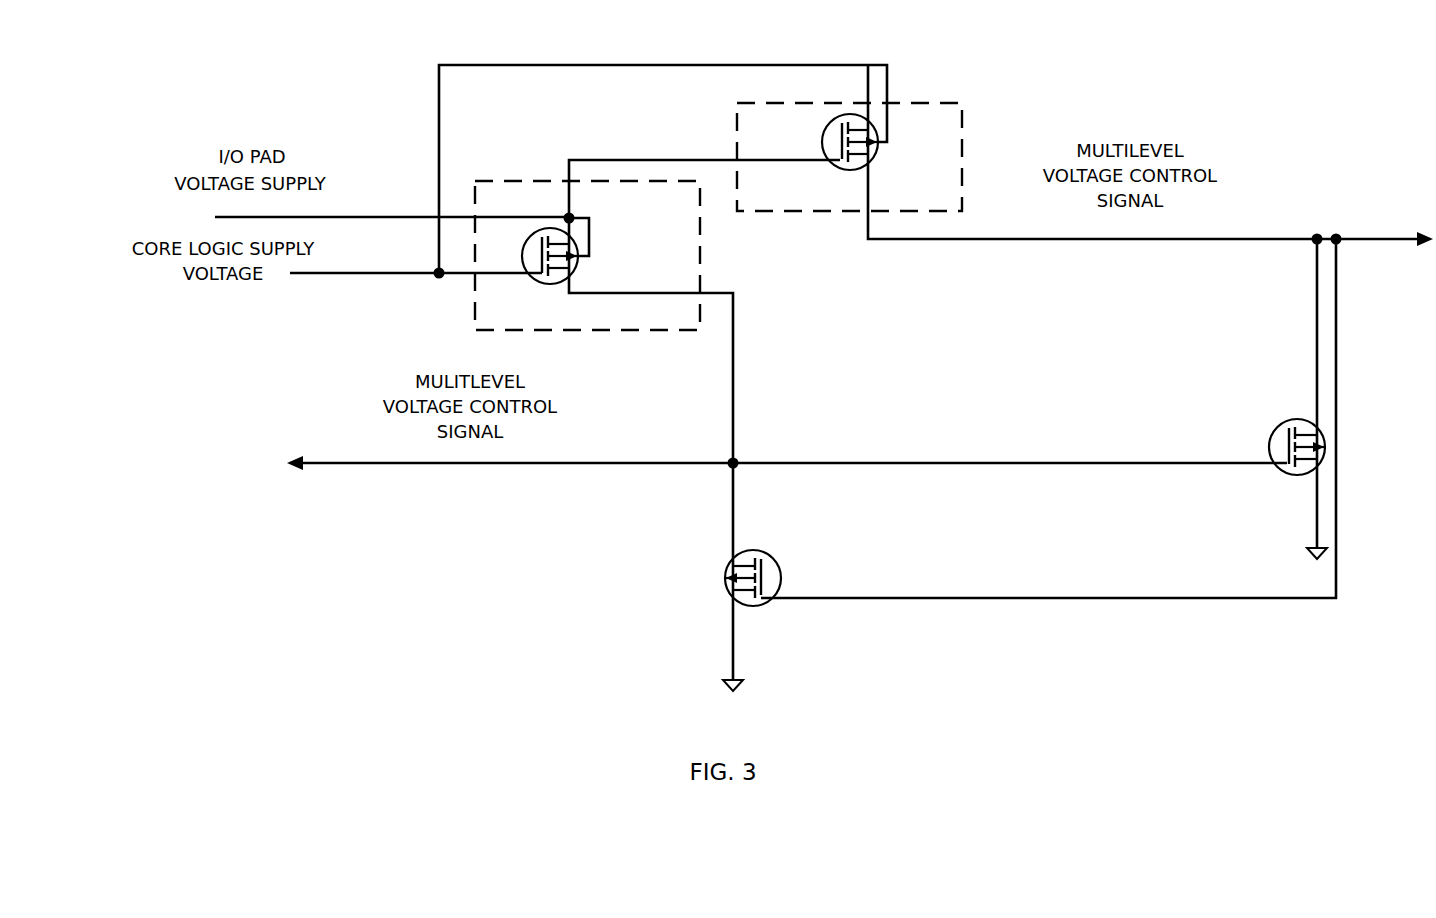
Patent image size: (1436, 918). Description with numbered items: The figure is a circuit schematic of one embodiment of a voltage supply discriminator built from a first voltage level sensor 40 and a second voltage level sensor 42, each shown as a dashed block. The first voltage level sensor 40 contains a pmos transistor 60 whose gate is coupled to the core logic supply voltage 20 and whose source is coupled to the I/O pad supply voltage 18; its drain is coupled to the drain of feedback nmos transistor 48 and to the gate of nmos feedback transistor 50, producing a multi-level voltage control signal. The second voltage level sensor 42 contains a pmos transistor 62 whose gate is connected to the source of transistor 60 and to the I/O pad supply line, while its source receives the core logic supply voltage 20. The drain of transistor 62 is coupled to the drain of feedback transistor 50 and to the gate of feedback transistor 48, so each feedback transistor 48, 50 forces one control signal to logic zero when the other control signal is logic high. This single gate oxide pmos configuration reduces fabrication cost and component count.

The I/O pad supply voltage 18 is at (402, 216).
The core logic supply voltage 20 is at (403, 275).
The first voltage level sensor 40 is at (587, 331).
The second voltage level sensor 42 is at (963, 157).
The feedback transistor 48 is at (781, 578).
The feedback transistor 50 is at (1263, 440).
The pmos transistor 60 is at (537, 228).
The pmos transistor 62 is at (850, 170).